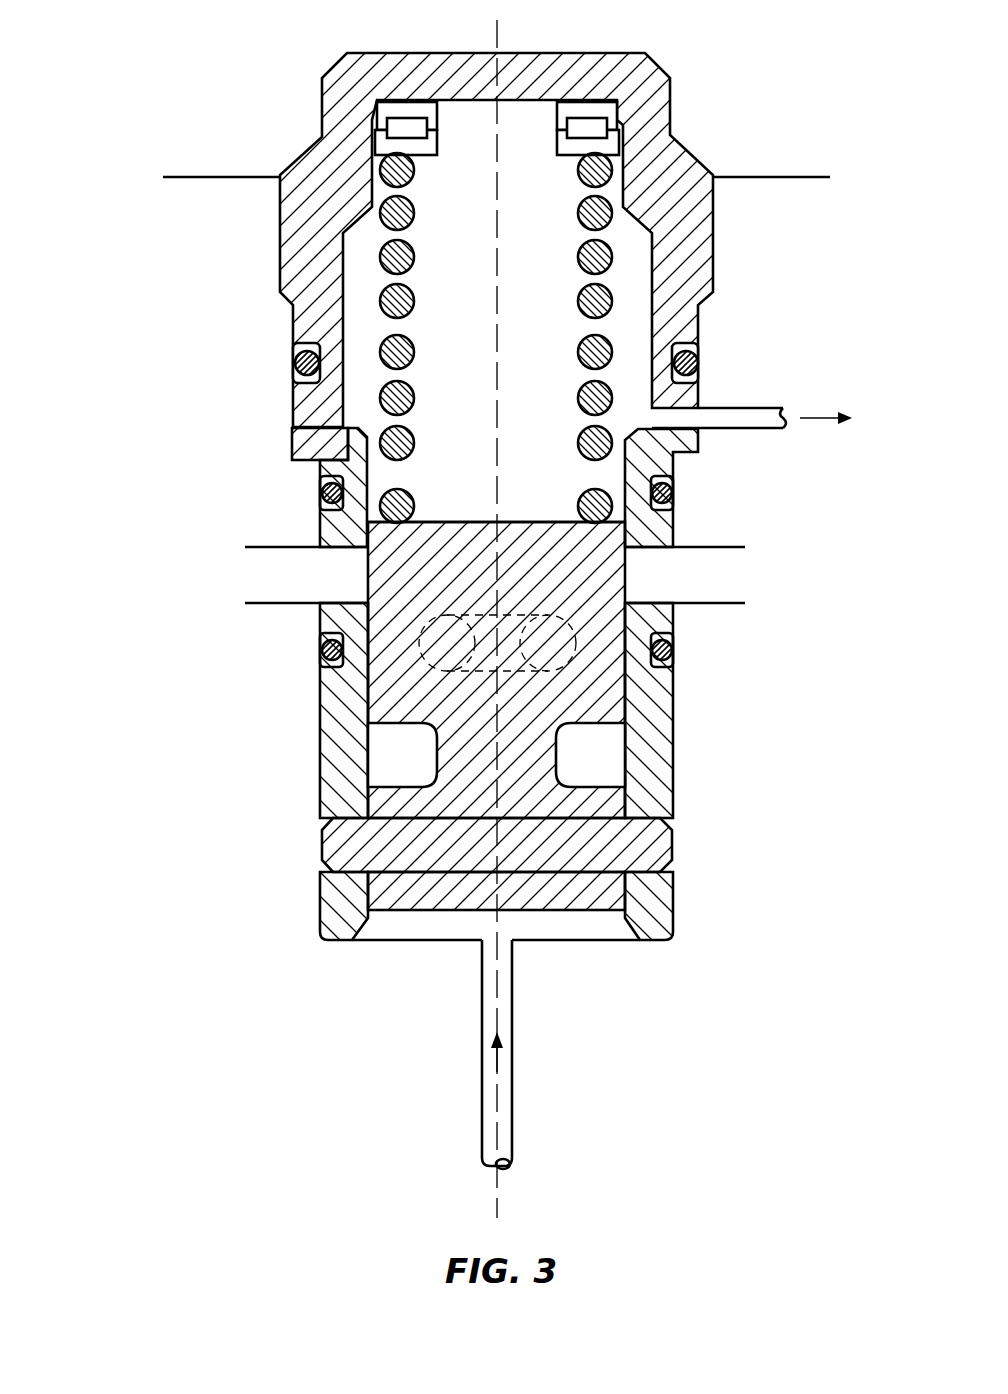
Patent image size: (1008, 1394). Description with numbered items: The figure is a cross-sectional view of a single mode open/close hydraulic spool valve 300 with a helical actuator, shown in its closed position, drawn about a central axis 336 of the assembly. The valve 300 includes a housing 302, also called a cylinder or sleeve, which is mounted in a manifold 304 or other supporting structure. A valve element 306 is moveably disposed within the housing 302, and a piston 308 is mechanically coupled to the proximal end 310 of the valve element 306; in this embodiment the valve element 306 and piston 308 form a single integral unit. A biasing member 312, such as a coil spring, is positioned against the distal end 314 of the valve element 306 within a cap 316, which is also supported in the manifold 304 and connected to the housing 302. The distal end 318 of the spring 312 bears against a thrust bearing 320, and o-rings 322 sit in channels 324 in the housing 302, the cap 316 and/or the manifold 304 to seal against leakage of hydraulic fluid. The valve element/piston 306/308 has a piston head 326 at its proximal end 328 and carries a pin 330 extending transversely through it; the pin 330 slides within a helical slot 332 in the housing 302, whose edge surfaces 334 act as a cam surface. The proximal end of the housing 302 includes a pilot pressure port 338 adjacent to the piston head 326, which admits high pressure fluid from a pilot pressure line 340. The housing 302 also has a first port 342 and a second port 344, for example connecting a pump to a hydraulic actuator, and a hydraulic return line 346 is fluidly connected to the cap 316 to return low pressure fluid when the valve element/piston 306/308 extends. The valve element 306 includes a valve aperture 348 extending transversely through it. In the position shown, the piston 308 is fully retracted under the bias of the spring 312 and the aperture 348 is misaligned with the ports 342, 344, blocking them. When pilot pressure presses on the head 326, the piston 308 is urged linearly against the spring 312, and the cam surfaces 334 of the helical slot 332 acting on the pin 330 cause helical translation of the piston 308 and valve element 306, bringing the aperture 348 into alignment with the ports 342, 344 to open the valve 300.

The hydraulic spool valve 300 is at (203, 141).
The housing 302 is at (655, 712).
The manifold 304 is at (765, 185).
The valve element 306 is at (572, 577).
The piston 308 is at (475, 815).
The proximal end of the valve element 310 is at (585, 738).
The biasing member 312 is at (400, 303).
The distal end of the valve element 314 is at (549, 522).
The cap 316 is at (650, 93).
The distal end of the spring 318 is at (380, 167).
The thrust bearing 320 is at (407, 125).
The o-rings 322 is at (297, 364).
The channels 324 is at (298, 381).
The piston head 326 is at (575, 910).
The proximal end of the valve element/piston 328 is at (610, 890).
The pin 330 is at (362, 845).
The helical slot 332 is at (322, 862).
The edge surfaces 334 is at (338, 812).
The central axis 336 is at (518, 30).
The pilot pressure port 338 is at (487, 945).
The pilot pressure line 340 is at (490, 1142).
The first port 342 is at (345, 562).
The second port 344 is at (648, 562).
The hydraulic return line 346 is at (762, 417).
The valve aperture 348 is at (470, 615).